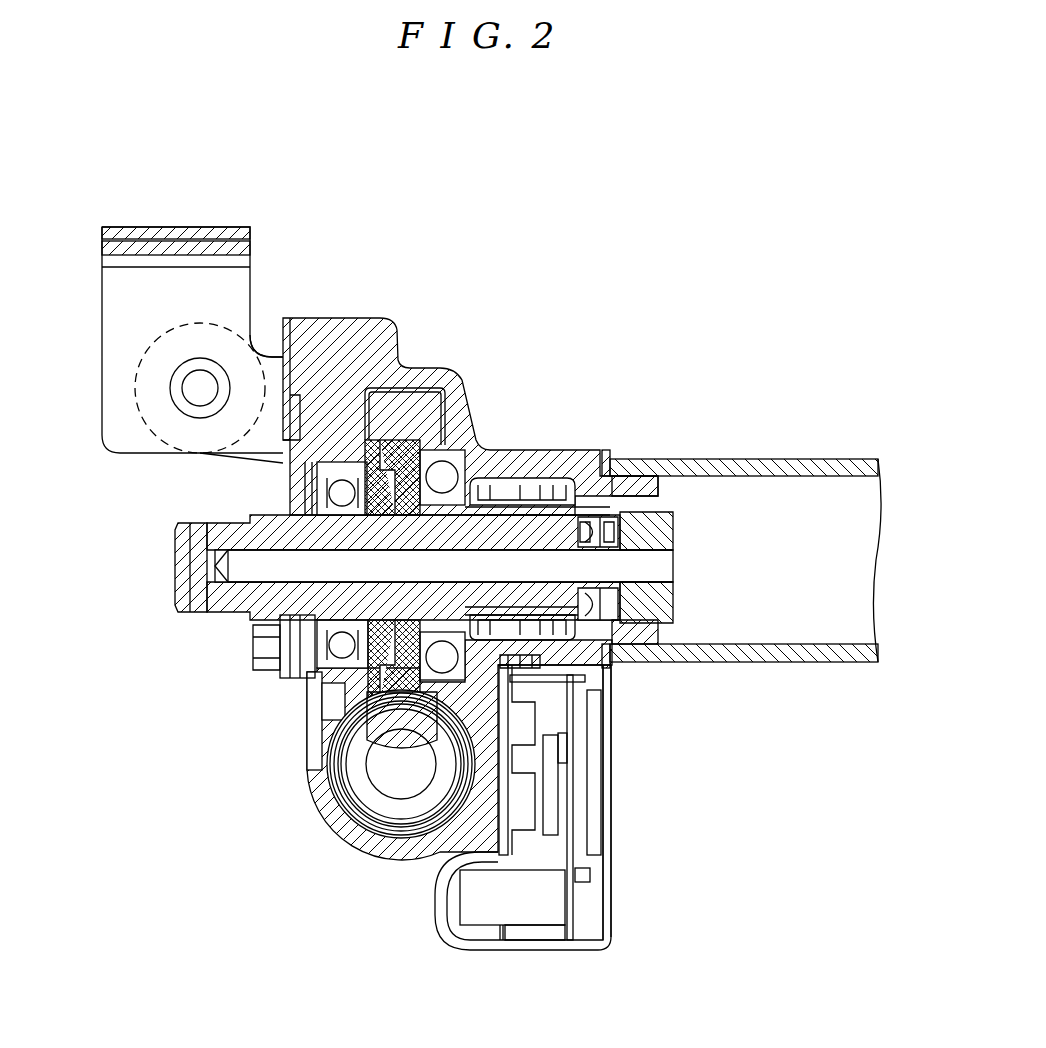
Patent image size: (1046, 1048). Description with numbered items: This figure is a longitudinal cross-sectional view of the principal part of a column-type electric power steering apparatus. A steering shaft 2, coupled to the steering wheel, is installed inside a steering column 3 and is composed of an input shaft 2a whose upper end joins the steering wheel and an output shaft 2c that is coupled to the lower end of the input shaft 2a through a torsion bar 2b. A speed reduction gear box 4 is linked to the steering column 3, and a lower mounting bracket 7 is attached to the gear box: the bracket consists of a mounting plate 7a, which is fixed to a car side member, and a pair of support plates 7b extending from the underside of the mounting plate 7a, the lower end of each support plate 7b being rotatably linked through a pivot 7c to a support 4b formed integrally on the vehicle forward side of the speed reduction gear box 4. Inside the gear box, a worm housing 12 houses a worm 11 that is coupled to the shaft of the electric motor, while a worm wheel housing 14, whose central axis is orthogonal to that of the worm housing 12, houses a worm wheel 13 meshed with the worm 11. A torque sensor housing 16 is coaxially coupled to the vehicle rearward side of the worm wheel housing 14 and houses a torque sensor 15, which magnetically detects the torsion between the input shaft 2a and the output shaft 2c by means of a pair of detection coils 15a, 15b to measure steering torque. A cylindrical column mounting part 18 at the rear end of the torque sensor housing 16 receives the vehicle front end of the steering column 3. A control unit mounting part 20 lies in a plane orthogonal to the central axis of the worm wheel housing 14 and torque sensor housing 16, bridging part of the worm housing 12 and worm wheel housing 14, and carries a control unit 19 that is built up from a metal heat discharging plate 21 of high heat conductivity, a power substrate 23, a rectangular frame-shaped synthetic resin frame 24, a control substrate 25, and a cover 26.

The steering shaft 2 is at (172, 540).
The input shaft 2a is at (660, 600).
The torsion bar 2b is at (262, 650).
The output shaft 2c is at (262, 598).
The steering column 3 is at (825, 650).
The speed reduction gear box 4 is at (472, 416).
The support 4b is at (265, 345).
The lower mounting bracket 7 is at (153, 329).
The mounting plate 7a is at (160, 232).
The support plate 7b is at (125, 333).
The pivot 7c is at (195, 395).
The worm 11 is at (345, 835).
The worm housing 12 is at (330, 788).
The worm wheel 13 is at (430, 410).
The worm wheel housing 14 is at (455, 375).
The torque sensor 15 is at (565, 645).
The detection coil 15a is at (585, 545).
The detection coil 15b is at (560, 540).
The torque sensor housing 16 is at (540, 465).
The column mounting part 18 is at (610, 455).
The control unit 19 is at (617, 925).
The control unit mounting part 20 is at (504, 784).
The heat discharging plate 21 is at (497, 818).
The power substrate 23 is at (482, 850).
The synthetic resin frame 24 is at (520, 935).
The control substrate 25 is at (573, 910).
The cover 26 is at (612, 888).